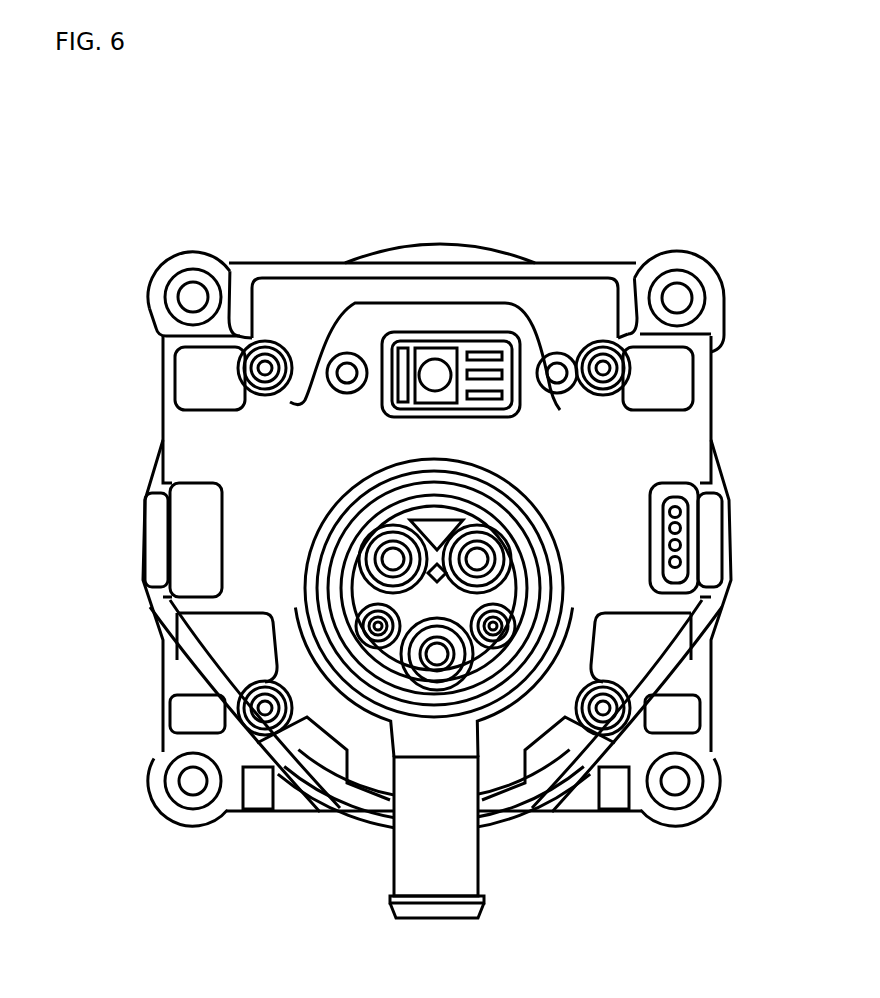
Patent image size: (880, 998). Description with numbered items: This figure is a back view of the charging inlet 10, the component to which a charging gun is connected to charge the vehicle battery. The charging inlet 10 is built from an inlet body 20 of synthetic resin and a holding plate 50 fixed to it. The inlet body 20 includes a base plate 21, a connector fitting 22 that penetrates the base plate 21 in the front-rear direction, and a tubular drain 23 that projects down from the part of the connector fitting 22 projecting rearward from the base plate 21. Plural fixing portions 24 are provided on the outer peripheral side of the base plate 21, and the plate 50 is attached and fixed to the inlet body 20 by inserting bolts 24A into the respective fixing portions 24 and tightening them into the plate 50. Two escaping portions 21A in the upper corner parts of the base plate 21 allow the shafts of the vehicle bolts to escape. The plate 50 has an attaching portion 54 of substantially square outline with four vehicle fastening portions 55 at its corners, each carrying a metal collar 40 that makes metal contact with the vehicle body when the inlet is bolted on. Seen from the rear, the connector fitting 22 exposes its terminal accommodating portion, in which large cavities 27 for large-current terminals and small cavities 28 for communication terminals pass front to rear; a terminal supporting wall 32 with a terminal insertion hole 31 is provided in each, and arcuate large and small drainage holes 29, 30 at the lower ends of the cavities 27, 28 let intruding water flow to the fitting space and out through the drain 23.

The charging inlet 10 is at (437, 150).
The inlet body 20 is at (222, 222).
The base plate 21 is at (495, 285).
The escaping portion 21A is at (232, 318).
The connector fitting 22 is at (467, 490).
The drain 23 is at (437, 905).
The fixing portion 24 is at (240, 362).
The bolt 24A is at (262, 372).
The large cavity 27 is at (672, 530).
The small cavity 28 is at (508, 632).
The large drainage hole 29 is at (500, 590).
The small drainage hole 30 is at (478, 660).
The terminal insertion hole 31 is at (477, 559).
The terminal supporting wall 32 is at (500, 570).
The collar 40 is at (193, 268).
The holding plate 50 is at (450, 226).
The attaching portion 54 is at (420, 248).
The vehicle fastening portion 55 is at (163, 258).